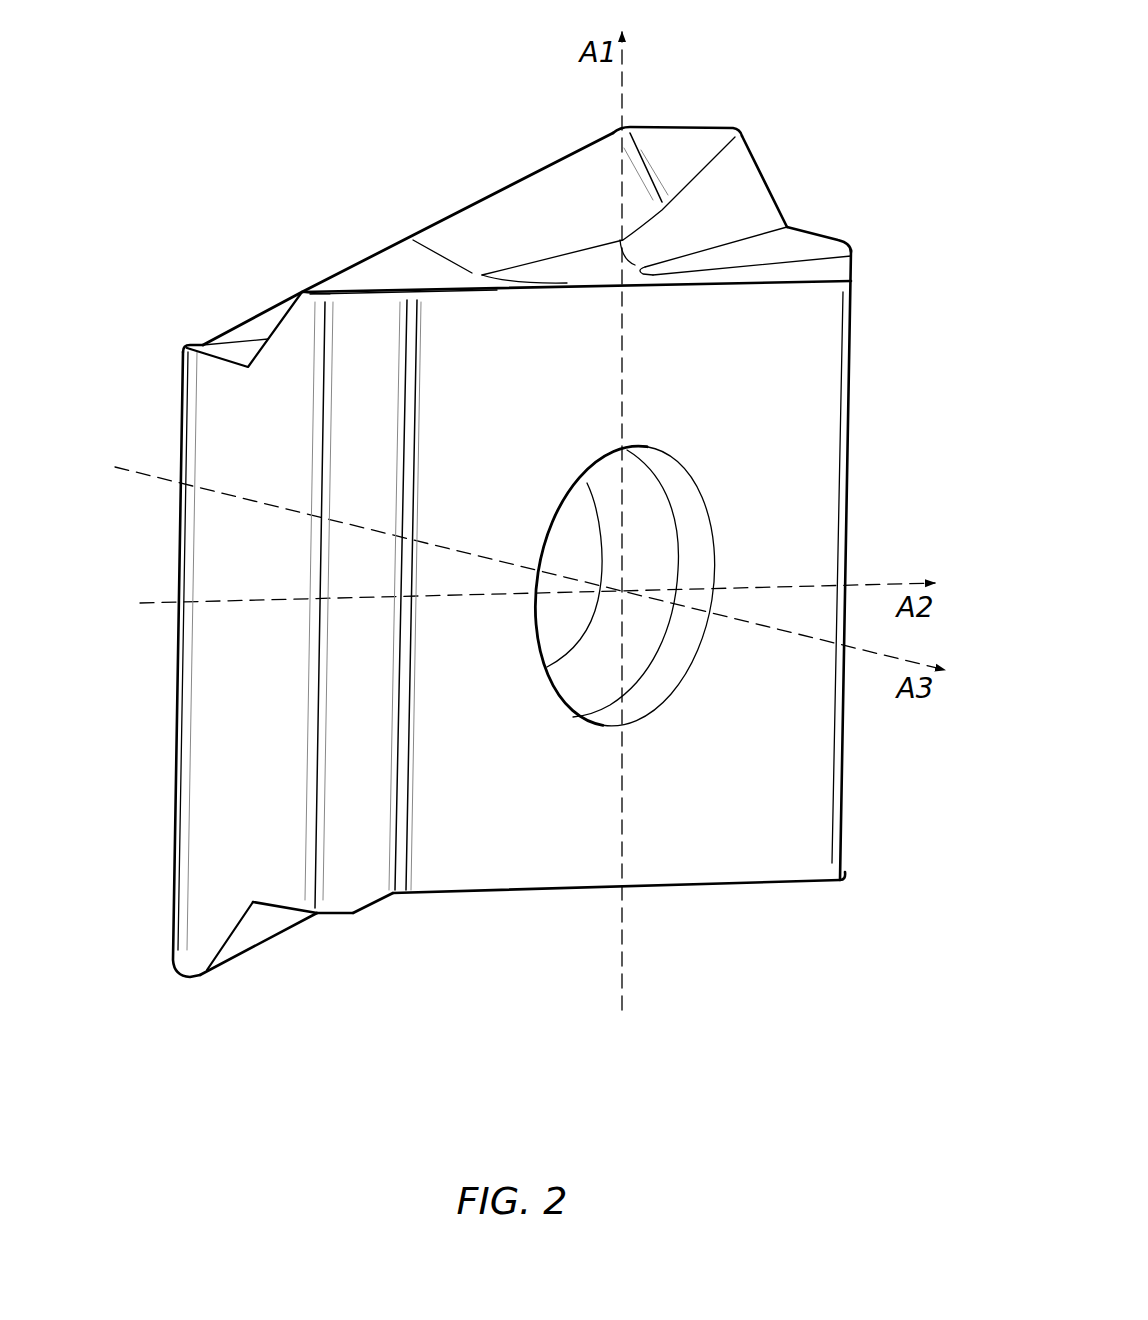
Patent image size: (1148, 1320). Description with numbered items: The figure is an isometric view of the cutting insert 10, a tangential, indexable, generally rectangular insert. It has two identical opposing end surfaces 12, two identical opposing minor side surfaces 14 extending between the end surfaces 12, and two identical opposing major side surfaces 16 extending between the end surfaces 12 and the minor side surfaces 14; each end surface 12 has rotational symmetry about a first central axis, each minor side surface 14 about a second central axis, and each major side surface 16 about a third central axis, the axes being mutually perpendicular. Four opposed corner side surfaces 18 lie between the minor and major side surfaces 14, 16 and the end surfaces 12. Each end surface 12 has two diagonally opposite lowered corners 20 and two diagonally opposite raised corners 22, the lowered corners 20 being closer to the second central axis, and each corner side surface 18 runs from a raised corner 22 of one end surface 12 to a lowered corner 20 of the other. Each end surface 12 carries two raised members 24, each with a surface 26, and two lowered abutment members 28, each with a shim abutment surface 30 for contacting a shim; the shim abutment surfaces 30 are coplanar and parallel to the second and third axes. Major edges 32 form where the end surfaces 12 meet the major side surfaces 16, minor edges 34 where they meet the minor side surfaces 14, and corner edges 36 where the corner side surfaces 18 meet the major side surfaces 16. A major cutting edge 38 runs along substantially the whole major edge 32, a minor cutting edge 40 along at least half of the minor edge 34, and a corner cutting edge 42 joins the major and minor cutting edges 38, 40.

The cutting insert 10 is at (220, 82).
The end surface 12 is at (515, 220).
The minor side surface 14 is at (860, 548).
The major side surface 16 is at (168, 463).
The corner side surface 18 is at (698, 120).
The lowered corner 20 is at (855, 273).
The raised corner 22 is at (738, 117).
The raised member 24 is at (642, 150).
The surface 26 is at (590, 175).
The lowered abutment member 28 is at (792, 248).
The shim abutment surface 30 is at (812, 245).
The major edge 32 is at (573, 282).
The minor edge 34 is at (772, 190).
The corner edge 36 is at (175, 712).
The major cutting edge 38 is at (422, 227).
The minor cutting edge 40 is at (760, 167).
The corner cutting edge 42 is at (313, 292).